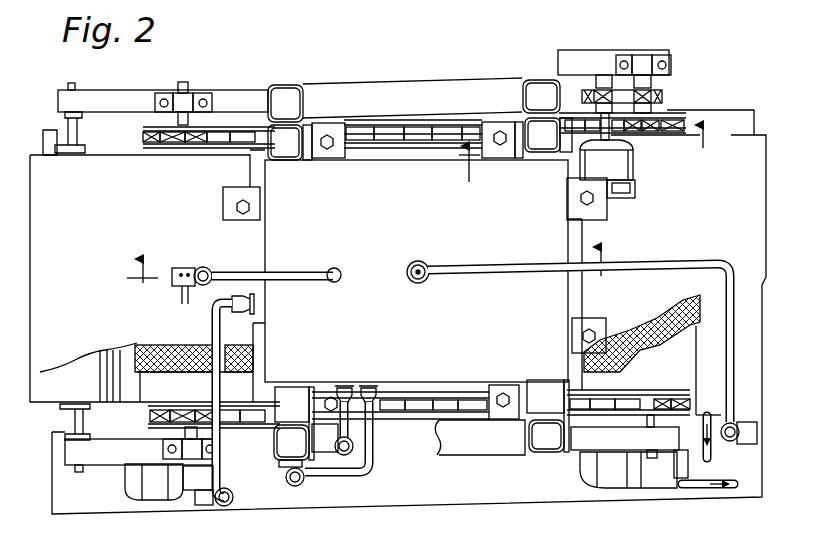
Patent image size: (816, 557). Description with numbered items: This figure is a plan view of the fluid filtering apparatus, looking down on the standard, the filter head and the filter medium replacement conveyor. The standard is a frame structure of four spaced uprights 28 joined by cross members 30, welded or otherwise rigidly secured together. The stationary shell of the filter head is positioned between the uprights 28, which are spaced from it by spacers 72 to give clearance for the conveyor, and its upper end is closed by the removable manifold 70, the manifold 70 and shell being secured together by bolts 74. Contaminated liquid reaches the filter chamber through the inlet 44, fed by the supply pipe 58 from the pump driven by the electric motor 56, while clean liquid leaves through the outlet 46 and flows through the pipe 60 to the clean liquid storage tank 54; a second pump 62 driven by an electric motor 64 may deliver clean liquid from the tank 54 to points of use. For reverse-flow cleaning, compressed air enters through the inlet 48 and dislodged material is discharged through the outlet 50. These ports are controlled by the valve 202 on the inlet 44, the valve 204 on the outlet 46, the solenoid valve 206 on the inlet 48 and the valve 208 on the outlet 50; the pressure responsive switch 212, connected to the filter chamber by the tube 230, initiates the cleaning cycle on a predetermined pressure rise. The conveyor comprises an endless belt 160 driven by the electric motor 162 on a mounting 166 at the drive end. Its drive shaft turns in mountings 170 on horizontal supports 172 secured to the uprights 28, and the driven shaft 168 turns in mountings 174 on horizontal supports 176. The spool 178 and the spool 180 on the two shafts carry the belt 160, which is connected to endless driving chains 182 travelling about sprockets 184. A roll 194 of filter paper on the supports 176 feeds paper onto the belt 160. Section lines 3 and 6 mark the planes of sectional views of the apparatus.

The section line 3- 3 is at (582, 153).
The section line 6- 6 is at (368, 276).
The uprights 28 is at (300, 88).
The cross members 30 is at (453, 82).
The inlet 44 is at (256, 305).
The outlet 46 is at (424, 268).
The inlet 48 is at (336, 268).
The outlet 50 is at (347, 385).
The storage tank 54 is at (62, 422).
The electric motor 56 is at (157, 501).
The supply pipe 58 is at (214, 328).
The pipe 60 is at (509, 264).
The second pump 62 is at (676, 478).
The electric motor 64 is at (614, 488).
The manifold 70 is at (567, 236).
The spacers 72 is at (300, 160).
The bolts 74 is at (327, 133).
The belt 160 is at (153, 346).
The electric motor 162 is at (623, 167).
The mounting 166 is at (633, 198).
The driven shaft 168 is at (183, 83).
The mountings 170 is at (645, 53).
The horizontal supports 172 is at (584, 52).
The mountings 174 is at (194, 96).
The horizontal supports 176 is at (101, 98).
The spool 178 is at (685, 372).
The spool 180 is at (148, 392).
The endless driving chains 182 is at (143, 146).
The sprockets 184 is at (173, 150).
The roll 194 is at (90, 339).
The valve 202 is at (203, 500).
The valve 204 is at (747, 444).
The valve 206 is at (188, 268).
The valve 208 is at (353, 445).
The pressure responsive switch 212 is at (302, 481).
The tube 230 is at (359, 462).